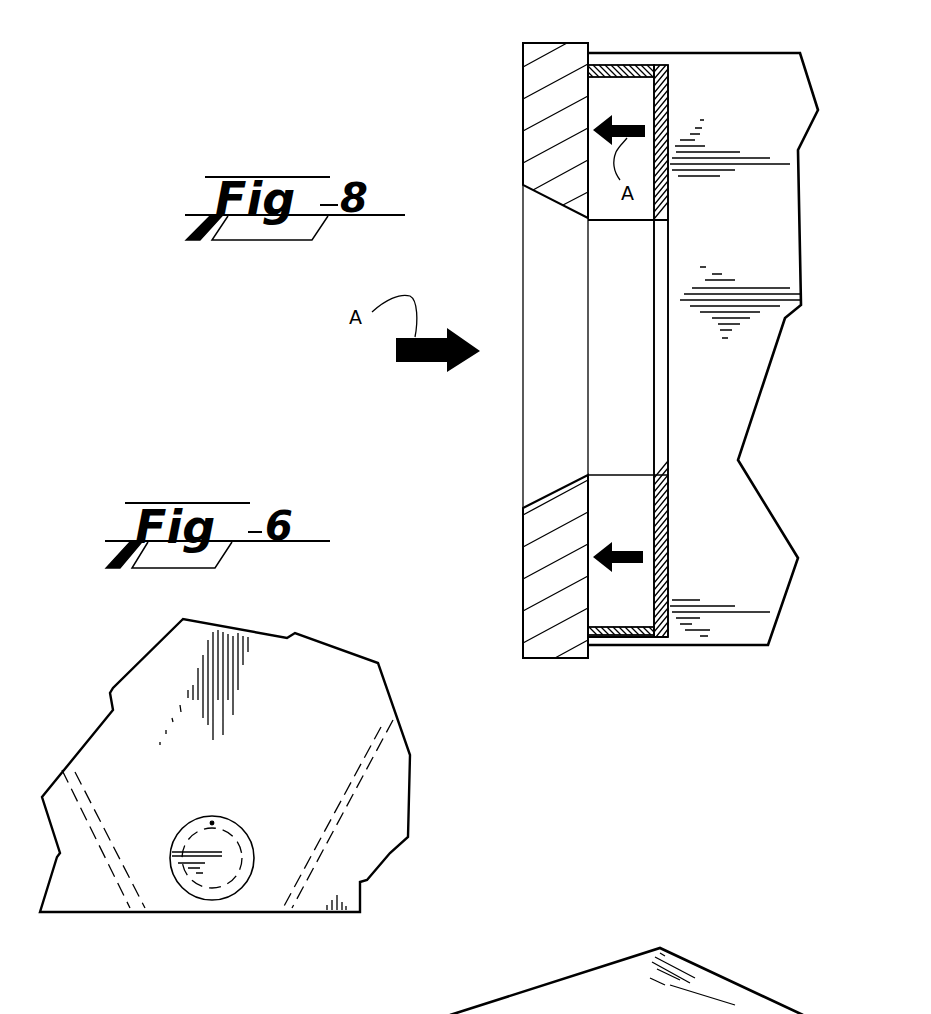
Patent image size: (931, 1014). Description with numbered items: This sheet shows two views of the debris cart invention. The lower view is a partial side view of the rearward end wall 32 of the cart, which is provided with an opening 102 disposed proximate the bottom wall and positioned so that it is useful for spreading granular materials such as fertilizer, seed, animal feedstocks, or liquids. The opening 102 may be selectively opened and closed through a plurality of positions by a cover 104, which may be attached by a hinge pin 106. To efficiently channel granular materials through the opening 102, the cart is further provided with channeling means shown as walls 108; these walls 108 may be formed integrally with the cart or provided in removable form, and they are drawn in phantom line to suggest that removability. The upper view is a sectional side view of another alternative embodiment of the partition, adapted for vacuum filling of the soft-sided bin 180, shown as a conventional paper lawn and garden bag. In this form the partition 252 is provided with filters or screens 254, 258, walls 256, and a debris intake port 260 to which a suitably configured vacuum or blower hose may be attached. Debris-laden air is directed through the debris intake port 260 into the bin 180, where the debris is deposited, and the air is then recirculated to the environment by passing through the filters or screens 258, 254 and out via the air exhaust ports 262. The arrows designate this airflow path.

In FIG. 6, the end wall 32 is at (298, 748).
In FIG. 6, the opening 102 is at (230, 890).
In FIG. 6, the cover 104 is at (177, 887).
In FIG. 6, the hinge pin 106 is at (214, 822).
In FIG. 6, the walls 108 is at (103, 862).
In FIG. 8, the soft-sided bin 180 is at (740, 382).
In FIG. 8, the partition 252 is at (556, 657).
In FIG. 8, the filter or screen 254 is at (523, 122).
In FIG. 8, the walls 256 is at (628, 65).
In FIG. 8, the filter or screen 258 is at (668, 100).
In FIG. 8, the debris intake port 260 is at (543, 503).
In FIG. 8, the air exhaust ports 262 is at (622, 603).